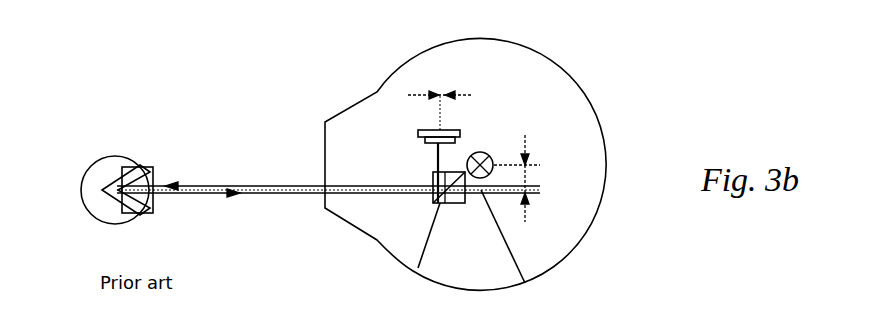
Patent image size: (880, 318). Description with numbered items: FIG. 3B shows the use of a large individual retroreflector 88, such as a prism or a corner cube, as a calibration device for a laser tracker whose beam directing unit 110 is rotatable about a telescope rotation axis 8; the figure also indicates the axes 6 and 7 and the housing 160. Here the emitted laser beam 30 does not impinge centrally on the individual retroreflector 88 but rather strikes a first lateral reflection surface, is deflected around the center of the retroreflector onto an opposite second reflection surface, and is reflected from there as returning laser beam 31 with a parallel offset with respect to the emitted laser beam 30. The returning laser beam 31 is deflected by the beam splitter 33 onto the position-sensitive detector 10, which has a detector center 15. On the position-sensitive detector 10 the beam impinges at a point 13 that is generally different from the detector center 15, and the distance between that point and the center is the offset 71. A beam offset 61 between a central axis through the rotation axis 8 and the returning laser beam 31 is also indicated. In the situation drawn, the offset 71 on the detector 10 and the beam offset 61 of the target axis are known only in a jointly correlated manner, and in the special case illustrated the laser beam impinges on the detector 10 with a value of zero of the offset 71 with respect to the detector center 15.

The beam directing unit 110 is at (353, 63).
The individual retroreflector 88 is at (148, 135).
The emitted laser beam 30 is at (243, 186).
The returning laser beam 31 is at (163, 196).
The axis 7 is at (440, 118).
The impingement point 13 is at (395, 156).
The detector center 15 is at (438, 144).
The position-sensitive detector 10 is at (462, 122).
The offset 71 is at (441, 108).
The telescope rotation axis 8 is at (484, 153).
The beam offset 61 is at (527, 175).
The axis 6 is at (530, 188).
The beam splitter 33 is at (403, 267).
The housing 160 is at (523, 282).